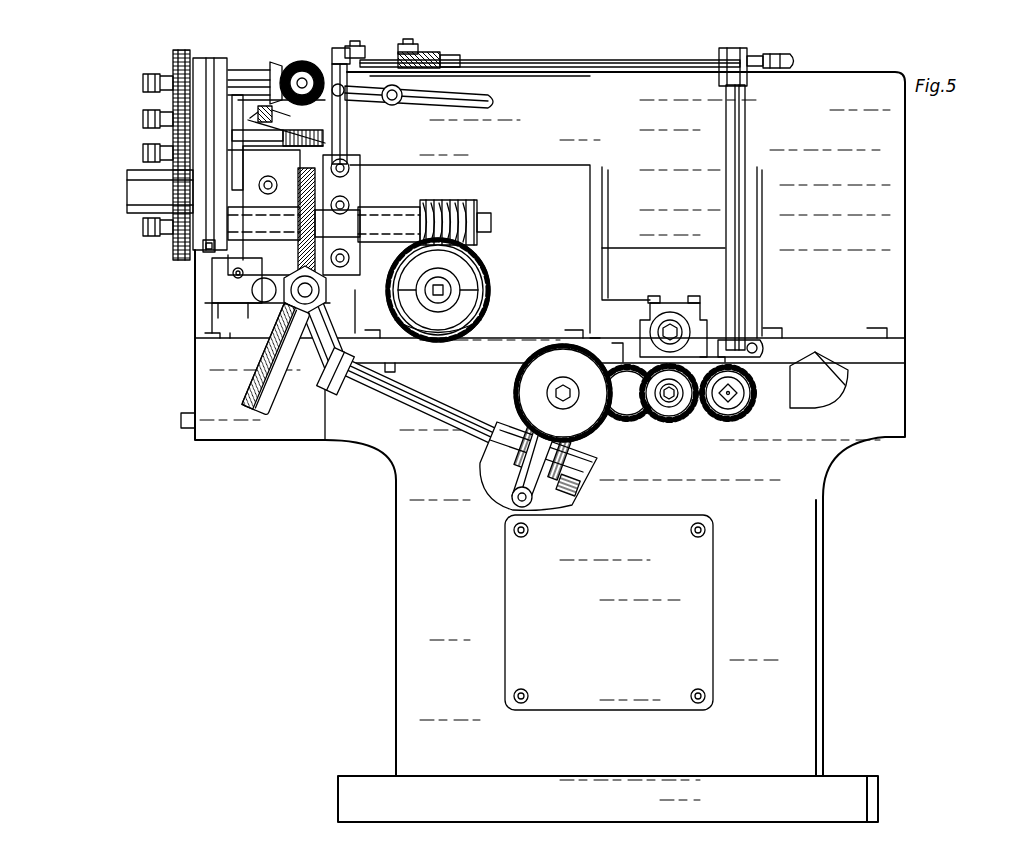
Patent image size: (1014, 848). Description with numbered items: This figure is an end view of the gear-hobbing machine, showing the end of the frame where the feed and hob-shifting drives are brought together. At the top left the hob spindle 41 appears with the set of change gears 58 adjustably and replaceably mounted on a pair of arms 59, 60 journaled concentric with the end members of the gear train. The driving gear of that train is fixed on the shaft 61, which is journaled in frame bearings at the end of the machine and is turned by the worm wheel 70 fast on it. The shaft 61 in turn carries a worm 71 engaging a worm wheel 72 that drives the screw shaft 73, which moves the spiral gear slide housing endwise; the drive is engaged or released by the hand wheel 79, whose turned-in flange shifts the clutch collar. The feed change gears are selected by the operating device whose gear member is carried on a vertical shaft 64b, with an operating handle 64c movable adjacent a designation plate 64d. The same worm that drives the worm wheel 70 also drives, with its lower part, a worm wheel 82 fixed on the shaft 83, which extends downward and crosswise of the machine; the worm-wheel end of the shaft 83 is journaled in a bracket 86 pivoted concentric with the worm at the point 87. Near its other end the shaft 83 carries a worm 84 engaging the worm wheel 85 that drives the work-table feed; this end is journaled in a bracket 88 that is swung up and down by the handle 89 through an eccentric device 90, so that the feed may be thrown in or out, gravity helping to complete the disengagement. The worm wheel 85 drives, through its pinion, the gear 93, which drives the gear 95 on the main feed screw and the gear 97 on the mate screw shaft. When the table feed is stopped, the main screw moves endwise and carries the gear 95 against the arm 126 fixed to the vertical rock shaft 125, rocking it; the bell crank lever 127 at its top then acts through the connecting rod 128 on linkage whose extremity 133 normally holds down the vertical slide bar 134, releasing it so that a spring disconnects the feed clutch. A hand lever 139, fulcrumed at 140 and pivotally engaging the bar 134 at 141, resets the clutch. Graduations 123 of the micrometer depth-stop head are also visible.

The hob spindle 41 is at (137, 205).
The change gears 58 is at (170, 197).
The arm 59 is at (200, 95).
The arm 60 is at (217, 143).
The shaft 61 is at (345, 207).
The vertical shaft 64b is at (237, 182).
The operating handle 64c is at (258, 108).
The designation plate 64d is at (300, 142).
The worm wheel 70 is at (330, 172).
The worm 71 is at (448, 205).
The worm wheel 72 is at (488, 265).
The screw shaft 73 is at (462, 292).
The hand wheel 79 is at (470, 315).
The worm wheel 82 is at (258, 375).
The shaft 83 is at (400, 410).
The worm 84 is at (510, 455).
The worm wheel 85 is at (585, 433).
The bracket 86 is at (308, 363).
The pivot 87 is at (318, 292).
The bracket 88 is at (572, 485).
The handle 89 is at (560, 443).
The eccentric device 90 is at (530, 505).
The gear 93 is at (625, 412).
The gear 95 is at (682, 413).
The gear 97 is at (745, 413).
The graduations 123 is at (650, 320).
The vertical rock shaft 125 is at (745, 130).
The arm 126 is at (700, 360).
The bell crank lever 127 is at (770, 55).
The connecting rod 128 is at (649, 58).
The extremity 133 is at (338, 60).
The vertical slide bar 134 is at (347, 108).
The hand lever 139 is at (465, 92).
The fulcrum 140 is at (405, 95).
The pivotal engagement 141 is at (312, 62).